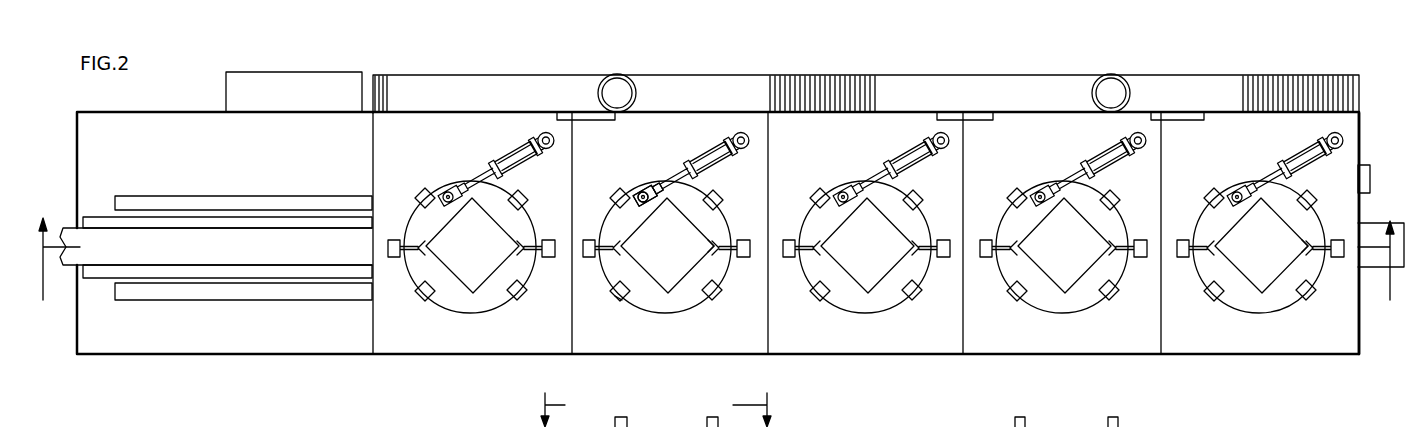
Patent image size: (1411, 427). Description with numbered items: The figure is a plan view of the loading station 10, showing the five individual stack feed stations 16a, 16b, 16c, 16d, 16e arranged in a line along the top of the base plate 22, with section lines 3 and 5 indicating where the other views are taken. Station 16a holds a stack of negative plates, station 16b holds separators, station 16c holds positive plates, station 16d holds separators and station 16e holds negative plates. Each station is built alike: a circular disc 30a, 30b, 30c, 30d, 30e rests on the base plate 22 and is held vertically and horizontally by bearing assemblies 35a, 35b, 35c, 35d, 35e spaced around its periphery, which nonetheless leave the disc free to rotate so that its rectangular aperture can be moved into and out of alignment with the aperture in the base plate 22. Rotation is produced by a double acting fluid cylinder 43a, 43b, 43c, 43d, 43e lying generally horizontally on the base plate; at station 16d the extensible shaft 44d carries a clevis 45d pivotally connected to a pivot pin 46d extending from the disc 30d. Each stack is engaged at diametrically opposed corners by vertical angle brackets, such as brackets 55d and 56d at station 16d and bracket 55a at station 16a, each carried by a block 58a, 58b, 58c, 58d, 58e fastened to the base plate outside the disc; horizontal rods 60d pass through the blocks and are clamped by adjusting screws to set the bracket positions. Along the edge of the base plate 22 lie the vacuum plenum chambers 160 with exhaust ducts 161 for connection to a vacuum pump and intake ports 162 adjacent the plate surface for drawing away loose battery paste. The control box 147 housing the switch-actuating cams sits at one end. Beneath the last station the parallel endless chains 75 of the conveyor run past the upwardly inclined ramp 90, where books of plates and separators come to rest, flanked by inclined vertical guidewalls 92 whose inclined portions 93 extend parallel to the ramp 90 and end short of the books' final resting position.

The loading station 10 is at (903, 67).
The base plate 22 is at (1332, 346).
The control box 147 is at (304, 80).
The vacuum plenum chamber 160 is at (680, 88).
The exhaust duct 161 is at (626, 80).
The intake port 162 is at (556, 122).
The endless chain 75 is at (108, 282).
The inclined ramp 90 is at (212, 266).
The inclined vertical guidewall 92 is at (350, 302).
The inclined portion 93 is at (306, 302).
The section line 3- 3 is at (719, 247).
The section line 5- 5 is at (829, 398).
The stack feed station 16a is at (1212, 140).
The stack feed station 16b is at (1022, 134).
The stack feed station 16c is at (803, 140).
The stack feed station 16d is at (591, 140).
The stack feed station 16e is at (435, 134).
The circular disc 30a is at (1206, 220).
The circular disc 30b is at (1113, 228).
The circular disc 30c is at (915, 226).
The circular disc 30d is at (672, 280).
The circular disc 30e is at (520, 226).
The bearing assembly 35a is at (1212, 298).
The bearing assembly 35b is at (1063, 244).
The bearing assembly 35c is at (822, 300).
The bearing assembly 35d is at (720, 214).
The bearing assembly 35e is at (428, 300).
The double acting fluid cylinder 43a is at (1308, 148).
The double acting fluid cylinder 43b is at (1100, 152).
The double acting fluid cylinder 43c is at (905, 150).
The double acting fluid cylinder 43d is at (720, 140).
The double acting fluid cylinder 43e is at (512, 162).
The extensible shaft 44d is at (662, 188).
The clevis 45d is at (652, 186).
The pivot pin 46d is at (640, 192).
The angle bracket 55a is at (1305, 236).
The angle bracket 55d is at (722, 242).
The angle bracket 56d is at (618, 292).
The block 58a is at (1338, 260).
The block 58b is at (1063, 248).
The block 58c is at (866, 248).
The block 58d is at (588, 238).
The block 58e is at (392, 238).
The rod 60d is at (617, 258).